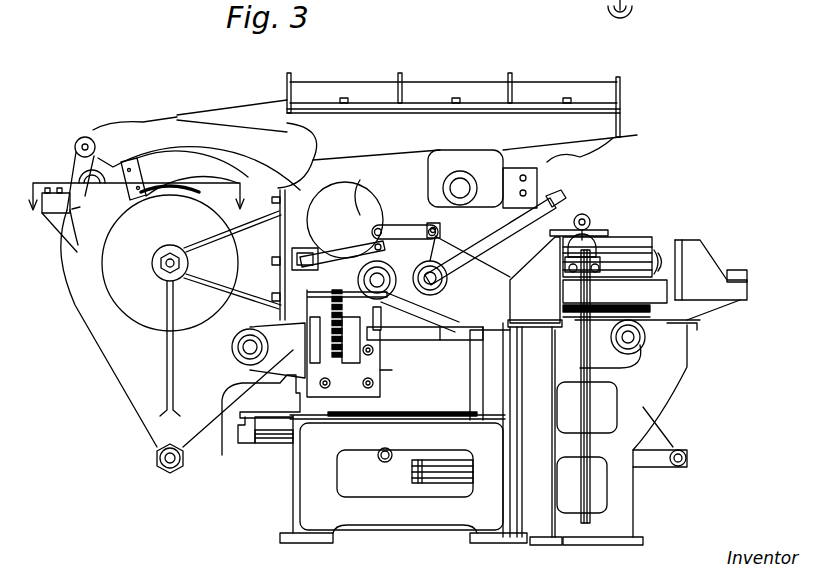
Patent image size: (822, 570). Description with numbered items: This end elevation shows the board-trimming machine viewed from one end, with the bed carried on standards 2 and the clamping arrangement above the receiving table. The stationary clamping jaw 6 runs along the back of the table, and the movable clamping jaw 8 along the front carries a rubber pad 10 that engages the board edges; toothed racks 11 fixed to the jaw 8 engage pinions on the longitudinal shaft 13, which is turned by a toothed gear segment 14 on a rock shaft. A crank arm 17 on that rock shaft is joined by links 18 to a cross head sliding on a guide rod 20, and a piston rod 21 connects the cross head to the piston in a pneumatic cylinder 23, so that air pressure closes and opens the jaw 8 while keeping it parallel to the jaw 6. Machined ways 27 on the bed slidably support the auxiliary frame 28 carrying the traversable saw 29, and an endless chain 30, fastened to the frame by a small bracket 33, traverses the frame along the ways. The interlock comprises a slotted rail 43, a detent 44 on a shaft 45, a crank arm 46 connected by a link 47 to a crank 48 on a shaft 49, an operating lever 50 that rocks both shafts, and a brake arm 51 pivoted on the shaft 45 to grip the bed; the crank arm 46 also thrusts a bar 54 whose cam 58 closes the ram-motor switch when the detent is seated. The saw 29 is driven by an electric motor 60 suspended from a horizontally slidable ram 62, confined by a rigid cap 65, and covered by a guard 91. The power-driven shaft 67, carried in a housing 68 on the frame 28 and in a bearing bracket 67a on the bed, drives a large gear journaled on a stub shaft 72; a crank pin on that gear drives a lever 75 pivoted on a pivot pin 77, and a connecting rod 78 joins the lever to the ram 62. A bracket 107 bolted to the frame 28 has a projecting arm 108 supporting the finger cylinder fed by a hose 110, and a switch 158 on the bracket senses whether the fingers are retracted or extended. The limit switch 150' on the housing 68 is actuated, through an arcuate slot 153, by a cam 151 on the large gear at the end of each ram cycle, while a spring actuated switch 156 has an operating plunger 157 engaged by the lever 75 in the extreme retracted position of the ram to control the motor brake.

The standards 2 is at (483, 434).
The stationary clamping jaw 6 is at (597, 291).
The movable clamping jaw 8 is at (711, 270).
The pad 10 is at (677, 240).
The toothed racks 11 is at (748, 287).
The longitudinal shaft 13 is at (700, 330).
The toothed gear segment 14 is at (618, 254).
The crank arm 17 is at (675, 430).
The links 18 is at (395, 462).
The guide rod 20 is at (272, 445).
The piston rod 21 is at (143, 185).
The pneumatic cylinder 23 is at (412, 485).
The machined ways 27 is at (455, 335).
The auxiliary frame 28 is at (446, 221).
The traversable saw 29 is at (575, 200).
The endless chain 30 is at (342, 360).
The small bracket 33 is at (318, 240).
The rail 43 is at (395, 340).
The detent 44 is at (394, 374).
The shaft 45 is at (388, 268).
The crank arm 46 is at (362, 188).
The link 47 is at (398, 224).
The crank 48 is at (442, 228).
The shaft 49 is at (447, 282).
The operating lever 50 is at (586, 151).
The brake arm 51 is at (440, 342).
The bar 54 is at (338, 252).
The cam 58 is at (297, 248).
The electric motor 60 is at (482, 179).
The ram 62 is at (252, 110).
The rigid cap 65 is at (483, 95).
The power-driven shaft 67 is at (232, 358).
The bearing bracket 67a is at (248, 433).
The housing 68 is at (138, 392).
The stub shaft 72 is at (152, 260).
The lever 75 is at (70, 153).
The pivot pin 77 is at (157, 460).
The connecting rod 78 is at (127, 122).
The guard 91 is at (639, 137).
The bracket 107 is at (535, 282).
The projecting arm 108 is at (610, 235).
The hose 110 is at (592, 378).
The limit switch 150' is at (94, 208).
The cam 151 is at (165, 200).
The arcuate slot 153 is at (150, 166).
The spring actuated switch 156 is at (48, 213).
The operating plunger 157 is at (78, 245).
The switch 158 is at (595, 222).